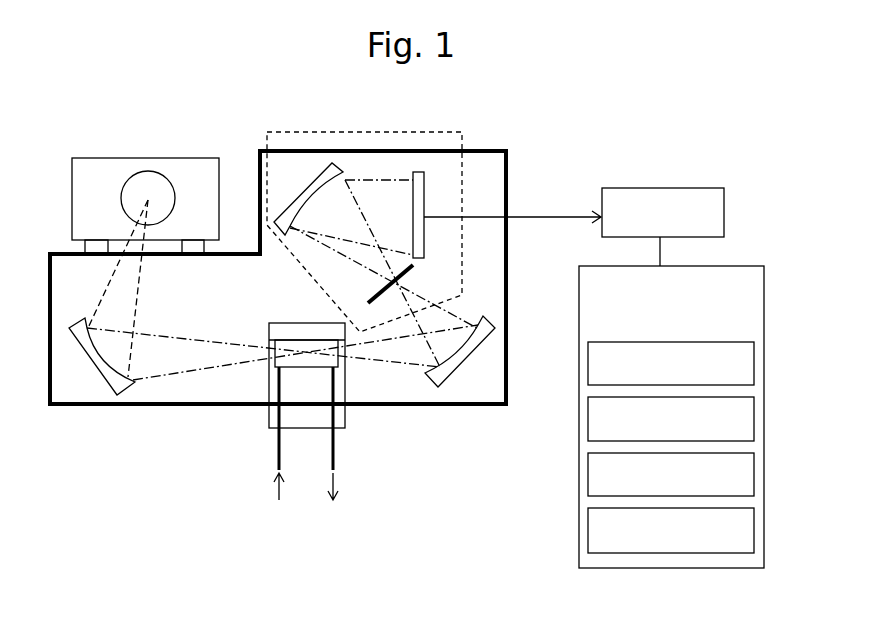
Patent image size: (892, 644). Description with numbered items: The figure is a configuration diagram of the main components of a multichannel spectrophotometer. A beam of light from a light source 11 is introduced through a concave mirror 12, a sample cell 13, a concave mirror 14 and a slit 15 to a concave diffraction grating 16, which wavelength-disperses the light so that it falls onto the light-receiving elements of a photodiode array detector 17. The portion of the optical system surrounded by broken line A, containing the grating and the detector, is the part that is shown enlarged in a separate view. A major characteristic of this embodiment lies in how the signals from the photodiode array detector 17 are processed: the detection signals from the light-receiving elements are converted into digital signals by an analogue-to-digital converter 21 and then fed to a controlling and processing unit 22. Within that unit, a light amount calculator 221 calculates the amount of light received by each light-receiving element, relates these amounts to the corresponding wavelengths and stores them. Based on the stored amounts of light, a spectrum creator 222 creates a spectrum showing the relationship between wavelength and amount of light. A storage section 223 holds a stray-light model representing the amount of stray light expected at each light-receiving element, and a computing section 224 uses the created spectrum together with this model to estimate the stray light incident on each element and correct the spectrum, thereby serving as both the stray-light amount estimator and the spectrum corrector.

The light source 11 is at (165, 172).
The concave mirror 12 is at (110, 390).
The sample cell 13 is at (267, 393).
The concave mirror 14 is at (488, 323).
The slit 15 is at (363, 300).
The concave diffraction grating 16 is at (335, 165).
The photodiode array detector 17 is at (422, 172).
The analogue-to-digital converter 21 is at (687, 185).
The controlling and processing unit 22 is at (713, 265).
The light amount calculator 221 is at (735, 340).
The spectrum creator 222 is at (743, 397).
The computing section 224 is at (742, 453).
The storage section 223 is at (740, 508).
The broken line A is at (364, 223).